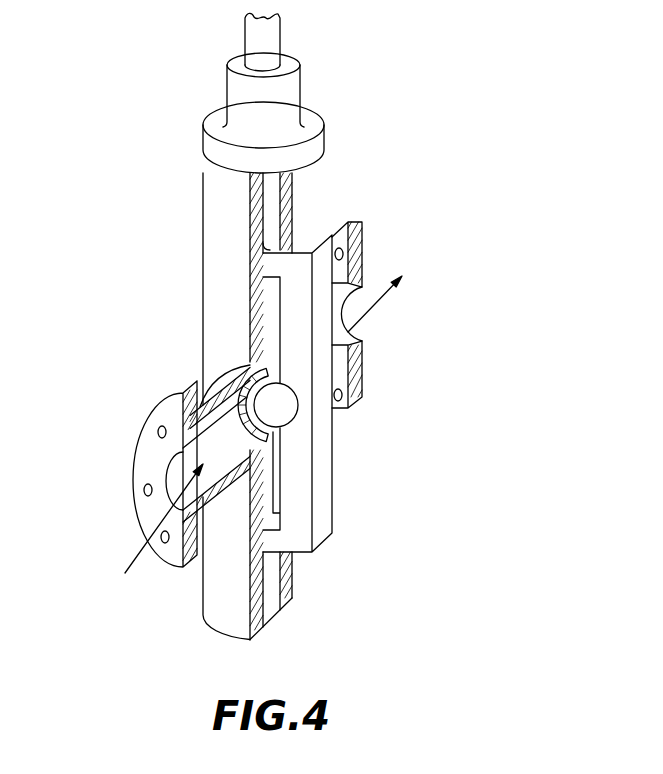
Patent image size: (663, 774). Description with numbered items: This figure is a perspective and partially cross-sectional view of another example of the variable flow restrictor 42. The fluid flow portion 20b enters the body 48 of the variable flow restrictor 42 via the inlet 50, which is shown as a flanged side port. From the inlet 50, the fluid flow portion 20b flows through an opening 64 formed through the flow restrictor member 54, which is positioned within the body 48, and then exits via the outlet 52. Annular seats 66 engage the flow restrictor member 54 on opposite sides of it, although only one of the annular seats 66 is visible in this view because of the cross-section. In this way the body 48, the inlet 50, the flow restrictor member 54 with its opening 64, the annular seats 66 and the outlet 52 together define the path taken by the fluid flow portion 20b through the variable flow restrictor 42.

The variable flow restrictor 42 is at (462, 90).
The body 48 is at (203, 292).
The inlet 50 is at (175, 470).
The outlet 52 is at (357, 297).
The flow restrictor member 54 is at (332, 477).
The opening 64 is at (286, 407).
The annular seats 66 is at (240, 410).
The fluid flow portion 20b is at (371, 303).